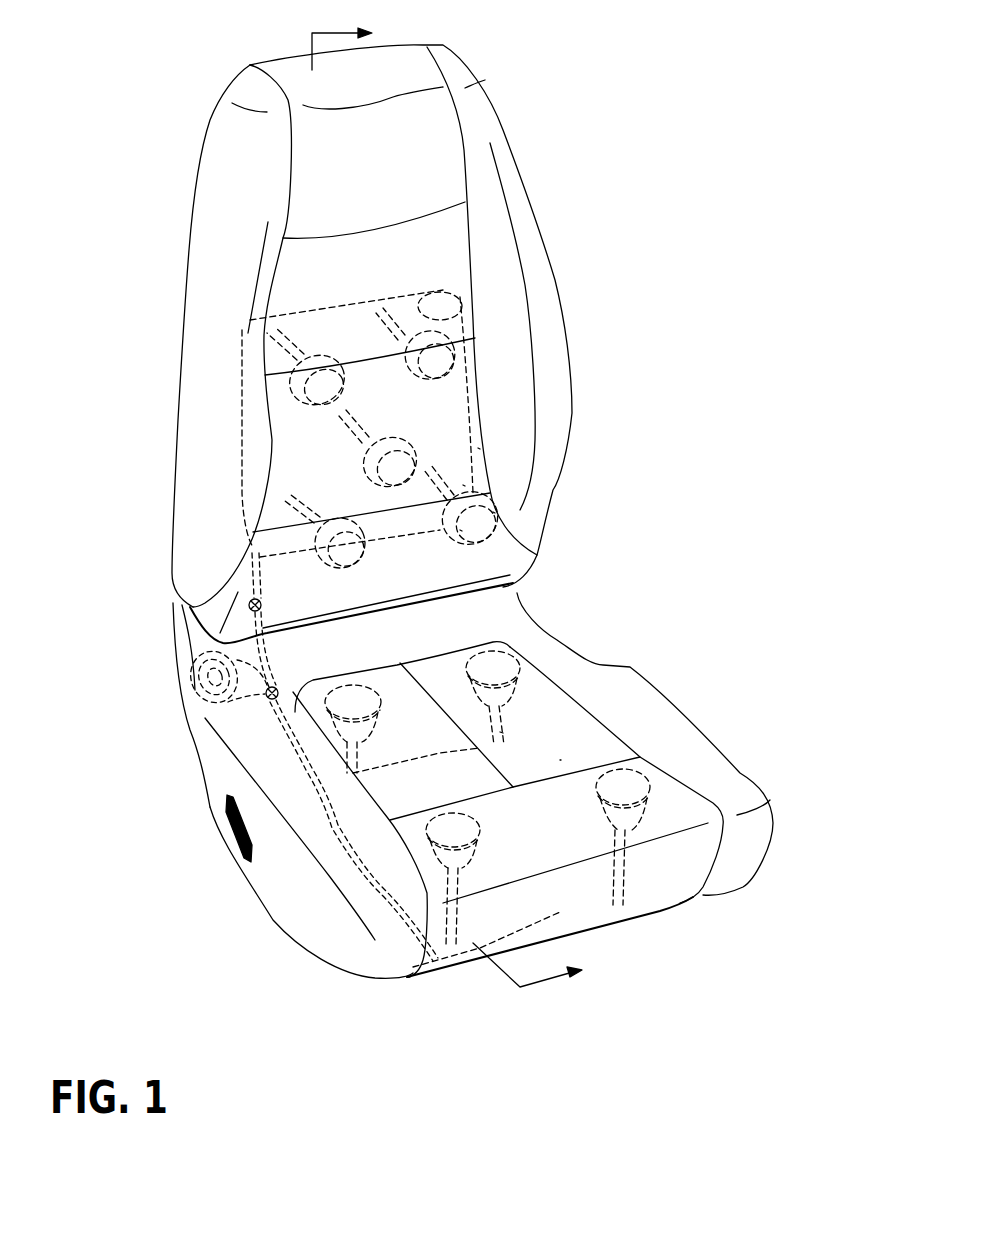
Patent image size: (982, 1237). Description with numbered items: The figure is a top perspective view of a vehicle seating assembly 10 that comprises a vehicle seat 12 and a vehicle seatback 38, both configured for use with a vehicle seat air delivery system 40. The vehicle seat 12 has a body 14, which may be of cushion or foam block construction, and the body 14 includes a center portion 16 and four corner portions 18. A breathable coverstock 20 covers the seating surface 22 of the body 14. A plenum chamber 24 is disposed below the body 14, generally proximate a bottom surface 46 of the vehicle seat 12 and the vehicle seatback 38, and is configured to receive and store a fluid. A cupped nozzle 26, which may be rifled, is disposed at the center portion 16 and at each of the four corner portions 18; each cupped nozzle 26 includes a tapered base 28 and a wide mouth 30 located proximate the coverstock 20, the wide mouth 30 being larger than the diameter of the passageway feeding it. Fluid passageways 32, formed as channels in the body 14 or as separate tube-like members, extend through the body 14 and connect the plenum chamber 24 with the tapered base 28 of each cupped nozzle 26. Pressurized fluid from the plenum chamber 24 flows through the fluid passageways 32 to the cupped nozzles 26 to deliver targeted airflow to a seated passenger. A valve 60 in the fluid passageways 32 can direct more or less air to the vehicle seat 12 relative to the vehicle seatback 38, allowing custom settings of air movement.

The vehicle seating assembly 10 is at (647, 138).
The vehicle seat 12 is at (692, 670).
The body 14 is at (353, 820).
The center portion 16 is at (503, 730).
The corner portions 18 is at (507, 640).
The breathable coverstock 20 is at (490, 128).
The seating surface 22 is at (563, 748).
The plenum chamber 24 is at (420, 297).
The cupped nozzle 26 is at (493, 512).
The tapered base 28 is at (463, 485).
The wide mouth 30 is at (460, 530).
The fluid passageways 32 is at (478, 448).
The vehicle seatback 38 is at (590, 328).
The vehicle seat air delivery system 40 is at (145, 456).
The bottom surface 46 is at (380, 980).
The valve 60 is at (251, 600).